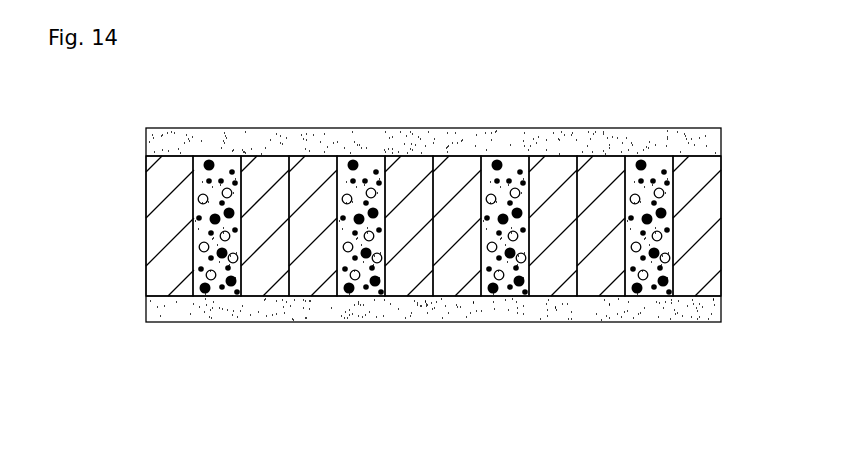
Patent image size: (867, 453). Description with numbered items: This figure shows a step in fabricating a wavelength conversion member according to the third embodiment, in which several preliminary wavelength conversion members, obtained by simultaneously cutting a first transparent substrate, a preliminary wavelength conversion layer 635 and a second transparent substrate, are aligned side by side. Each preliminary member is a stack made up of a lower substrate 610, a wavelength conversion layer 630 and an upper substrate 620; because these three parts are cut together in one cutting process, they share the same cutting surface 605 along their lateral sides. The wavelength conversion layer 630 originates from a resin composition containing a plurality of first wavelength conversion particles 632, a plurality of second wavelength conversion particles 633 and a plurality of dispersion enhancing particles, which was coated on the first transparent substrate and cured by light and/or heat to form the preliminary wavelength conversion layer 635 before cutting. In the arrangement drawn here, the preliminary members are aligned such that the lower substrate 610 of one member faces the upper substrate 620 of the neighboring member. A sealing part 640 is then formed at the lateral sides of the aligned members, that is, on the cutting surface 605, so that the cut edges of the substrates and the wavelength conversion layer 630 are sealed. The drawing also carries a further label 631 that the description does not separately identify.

The cutting surface 605 is at (373, 156).
The lower substrate 610 is at (158, 236).
The upper substrate 620 is at (267, 280).
The wavelength conversion layer 630 is at (379, 297).
The base resin 631 is at (228, 292).
The first wavelength conversion particles 632 is at (222, 288).
The second wavelength conversion particles 633 is at (205, 288).
The preliminary wavelength conversion layer 635 is at (203, 247).
The sealing part 640 is at (558, 148).